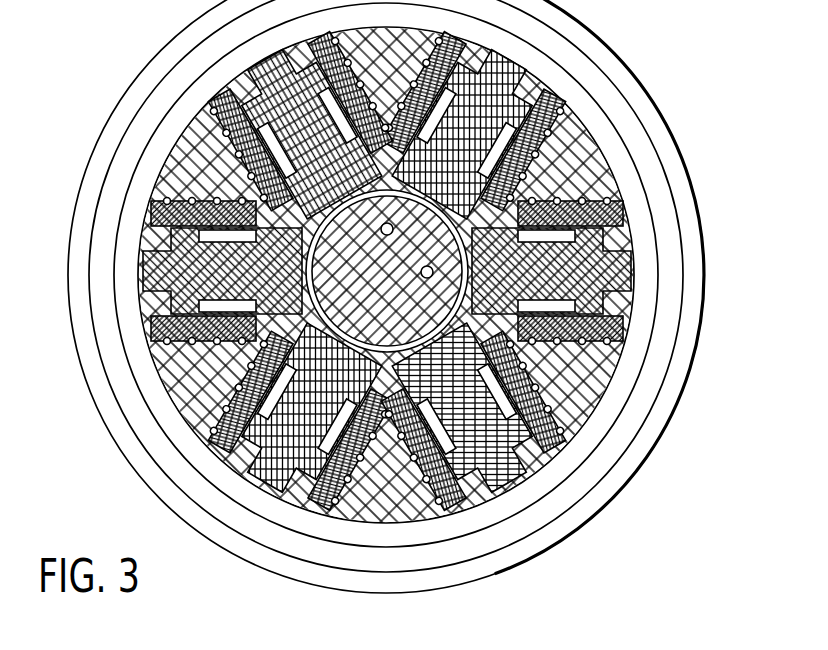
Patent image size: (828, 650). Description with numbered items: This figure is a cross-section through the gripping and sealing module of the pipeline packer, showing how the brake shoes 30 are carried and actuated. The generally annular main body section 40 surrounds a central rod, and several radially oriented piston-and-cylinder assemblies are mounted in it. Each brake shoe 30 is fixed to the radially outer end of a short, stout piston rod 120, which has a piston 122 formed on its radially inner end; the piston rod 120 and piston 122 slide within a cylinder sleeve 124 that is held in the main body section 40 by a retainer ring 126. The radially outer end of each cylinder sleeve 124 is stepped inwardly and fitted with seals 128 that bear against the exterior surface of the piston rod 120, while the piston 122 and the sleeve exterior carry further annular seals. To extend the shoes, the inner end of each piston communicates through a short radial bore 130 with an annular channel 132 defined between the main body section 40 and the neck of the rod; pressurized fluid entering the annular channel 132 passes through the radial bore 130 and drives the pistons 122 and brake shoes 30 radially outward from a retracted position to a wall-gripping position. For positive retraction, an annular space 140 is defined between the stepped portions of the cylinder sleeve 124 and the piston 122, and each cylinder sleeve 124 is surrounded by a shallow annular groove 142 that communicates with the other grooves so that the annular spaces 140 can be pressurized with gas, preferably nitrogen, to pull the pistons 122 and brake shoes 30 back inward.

The brake shoe 30 is at (617, 272).
The main body section 40 is at (582, 170).
The piston rod 120 is at (623, 318).
The piston 122 is at (518, 338).
The cylinder sleeve 124 is at (612, 190).
The retainer ring 126 is at (573, 443).
The seals 128 is at (627, 223).
The radial bore 130 is at (392, 236).
The annular channel 132 is at (323, 240).
The annular space 140 is at (545, 385).
The shallow annular groove 142 is at (565, 435).